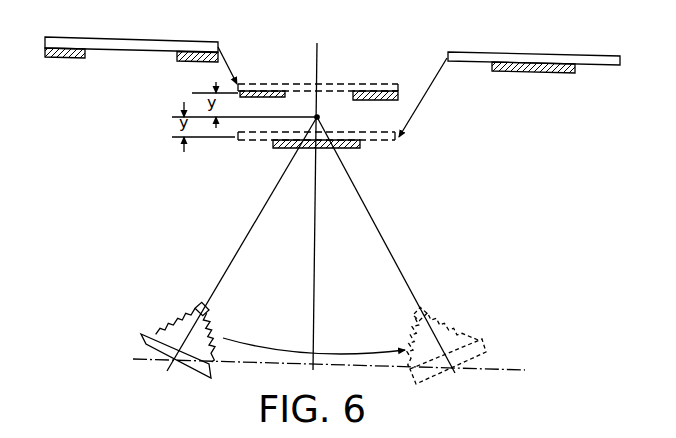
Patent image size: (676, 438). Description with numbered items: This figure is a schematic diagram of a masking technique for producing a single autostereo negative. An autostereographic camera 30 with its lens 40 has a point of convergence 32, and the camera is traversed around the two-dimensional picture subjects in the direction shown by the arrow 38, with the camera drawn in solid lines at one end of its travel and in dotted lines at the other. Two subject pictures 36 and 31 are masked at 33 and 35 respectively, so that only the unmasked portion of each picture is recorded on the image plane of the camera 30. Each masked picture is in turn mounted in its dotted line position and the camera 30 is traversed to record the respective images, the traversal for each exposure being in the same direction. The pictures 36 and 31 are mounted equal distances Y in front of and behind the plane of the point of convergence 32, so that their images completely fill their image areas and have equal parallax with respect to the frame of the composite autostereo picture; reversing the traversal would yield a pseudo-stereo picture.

The autostereographic camera 30 is at (183, 325).
The picture 31 is at (521, 54).
The point of convergence 32 is at (319, 117).
The mask 33 is at (71, 56).
The mask 35 is at (548, 73).
The picture 36 is at (63, 42).
The arrow 38 is at (348, 341).
The lens 40 is at (210, 312).